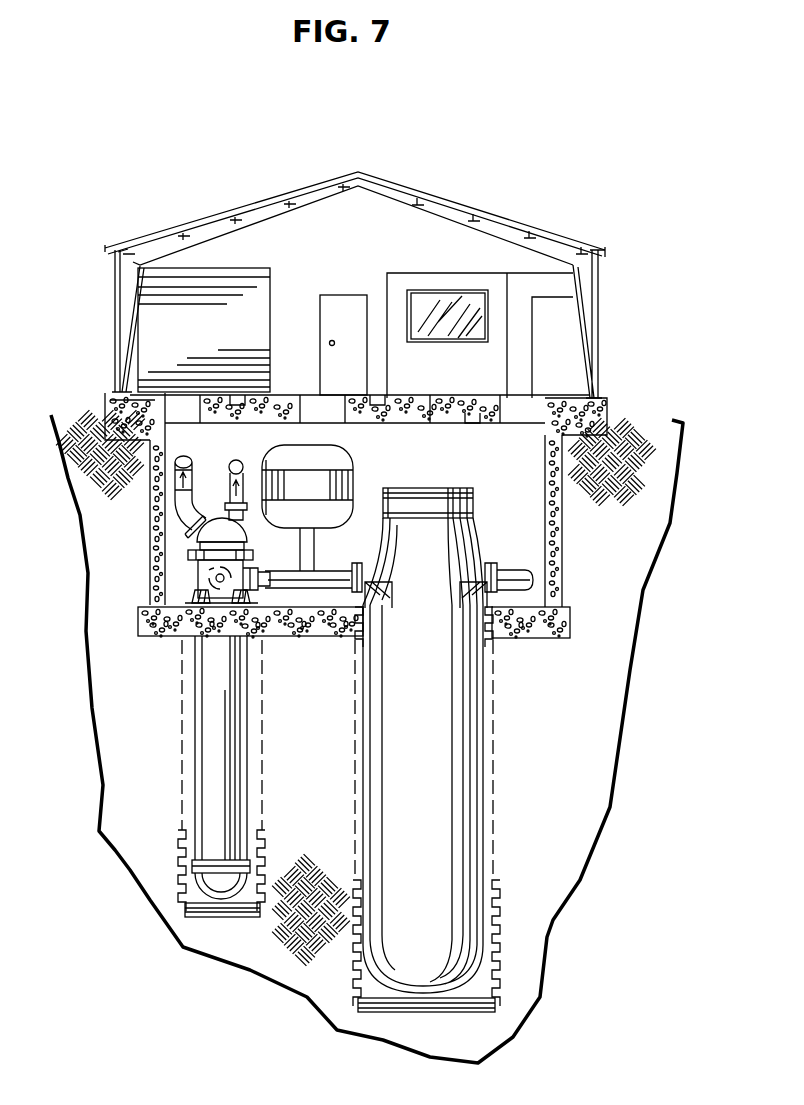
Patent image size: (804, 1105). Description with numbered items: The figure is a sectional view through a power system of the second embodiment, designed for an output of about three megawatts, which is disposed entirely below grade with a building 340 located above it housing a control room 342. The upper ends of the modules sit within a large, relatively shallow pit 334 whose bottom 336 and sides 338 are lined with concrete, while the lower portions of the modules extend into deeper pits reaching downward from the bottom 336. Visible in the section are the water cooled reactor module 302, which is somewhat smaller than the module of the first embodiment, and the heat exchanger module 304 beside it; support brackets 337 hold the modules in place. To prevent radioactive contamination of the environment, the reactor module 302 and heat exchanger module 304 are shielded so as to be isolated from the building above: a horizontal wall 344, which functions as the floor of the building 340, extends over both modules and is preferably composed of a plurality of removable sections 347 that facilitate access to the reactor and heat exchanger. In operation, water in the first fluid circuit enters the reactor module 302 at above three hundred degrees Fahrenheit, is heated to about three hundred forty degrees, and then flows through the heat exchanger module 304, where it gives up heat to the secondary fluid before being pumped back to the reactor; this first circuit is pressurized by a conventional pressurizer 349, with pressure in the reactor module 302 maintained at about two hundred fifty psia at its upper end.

The water cooled reactor module 302 is at (480, 523).
The heat exchanger module 304 is at (247, 808).
The pit 334 is at (566, 554).
The bottom of the pit 336 is at (307, 636).
The support brackets 337 is at (192, 603).
The sides of the pit 338 is at (149, 547).
The building 340 is at (612, 302).
The control room 342 is at (420, 270).
The horizontal wall 344 is at (378, 430).
The removable sections 347 is at (503, 395).
The pressurizer 349 is at (278, 447).